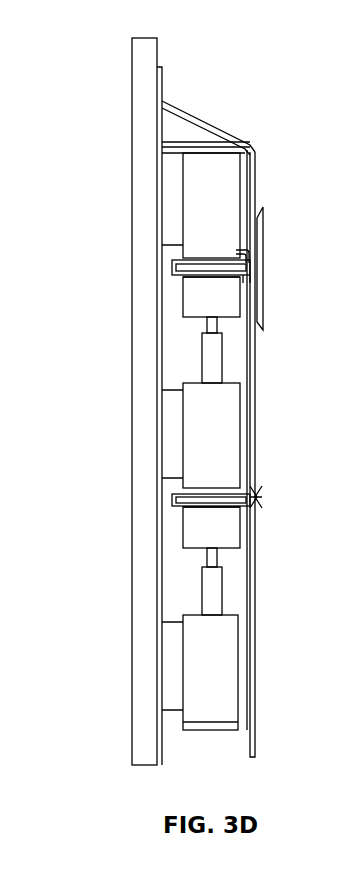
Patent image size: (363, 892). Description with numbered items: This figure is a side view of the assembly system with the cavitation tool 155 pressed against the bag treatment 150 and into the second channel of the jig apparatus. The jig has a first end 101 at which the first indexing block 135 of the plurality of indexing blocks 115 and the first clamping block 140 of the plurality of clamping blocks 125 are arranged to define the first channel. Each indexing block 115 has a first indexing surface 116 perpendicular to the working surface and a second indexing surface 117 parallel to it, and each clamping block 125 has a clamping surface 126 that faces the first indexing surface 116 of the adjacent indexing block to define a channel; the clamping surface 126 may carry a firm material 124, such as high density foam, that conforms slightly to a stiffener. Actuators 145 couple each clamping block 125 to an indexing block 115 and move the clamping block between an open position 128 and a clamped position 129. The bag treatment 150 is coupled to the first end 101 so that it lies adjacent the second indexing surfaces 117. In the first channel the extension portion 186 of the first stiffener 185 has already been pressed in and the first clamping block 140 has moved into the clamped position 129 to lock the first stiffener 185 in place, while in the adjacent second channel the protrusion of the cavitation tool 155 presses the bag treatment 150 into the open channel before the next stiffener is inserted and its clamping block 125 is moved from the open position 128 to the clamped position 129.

The first end 101 is at (191, 73).
The bag treatment 150 is at (200, 122).
The first indexing block 135 is at (225, 167).
The second indexing surface 117 is at (252, 190).
The first stiffener 185 is at (258, 222).
The extension portion 186 is at (242, 254).
The clamped position 129 is at (270, 277).
The first clamping block 140 is at (232, 298).
The actuator 145 is at (212, 343).
The indexing block 115 is at (224, 410).
The first indexing surface 116 is at (215, 262).
The firm material 124 is at (212, 276).
The clamping surface 126 is at (200, 288).
The cavitation tool 155 is at (259, 497).
The open position 128 is at (264, 508).
The clamping block 125 is at (232, 530).